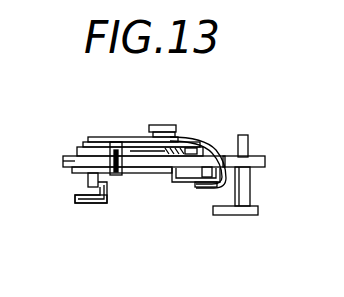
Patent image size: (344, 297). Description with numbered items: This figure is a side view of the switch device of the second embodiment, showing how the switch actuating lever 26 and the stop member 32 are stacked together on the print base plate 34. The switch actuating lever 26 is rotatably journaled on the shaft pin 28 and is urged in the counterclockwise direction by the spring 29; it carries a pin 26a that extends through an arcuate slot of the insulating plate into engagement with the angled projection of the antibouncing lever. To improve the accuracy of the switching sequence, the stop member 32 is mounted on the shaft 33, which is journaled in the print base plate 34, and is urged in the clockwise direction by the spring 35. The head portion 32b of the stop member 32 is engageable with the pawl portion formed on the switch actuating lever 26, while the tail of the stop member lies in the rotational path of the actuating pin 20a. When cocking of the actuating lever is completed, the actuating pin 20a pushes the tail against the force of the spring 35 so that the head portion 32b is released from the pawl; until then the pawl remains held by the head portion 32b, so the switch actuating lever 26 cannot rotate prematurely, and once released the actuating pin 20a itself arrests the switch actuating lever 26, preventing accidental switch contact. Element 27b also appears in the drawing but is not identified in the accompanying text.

The actuating pin 20a is at (249, 143).
The switch actuating lever 26 is at (77, 146).
The pin 26a is at (88, 180).
The bracket foot 27b is at (88, 203).
The shaft pin 28 is at (159, 125).
The spring 29 is at (196, 137).
The stop member 32 is at (163, 175).
The head portion 32b is at (117, 175).
The shaft 33 is at (205, 188).
The print base plate 34 is at (64, 167).
The spring 35 is at (188, 186).